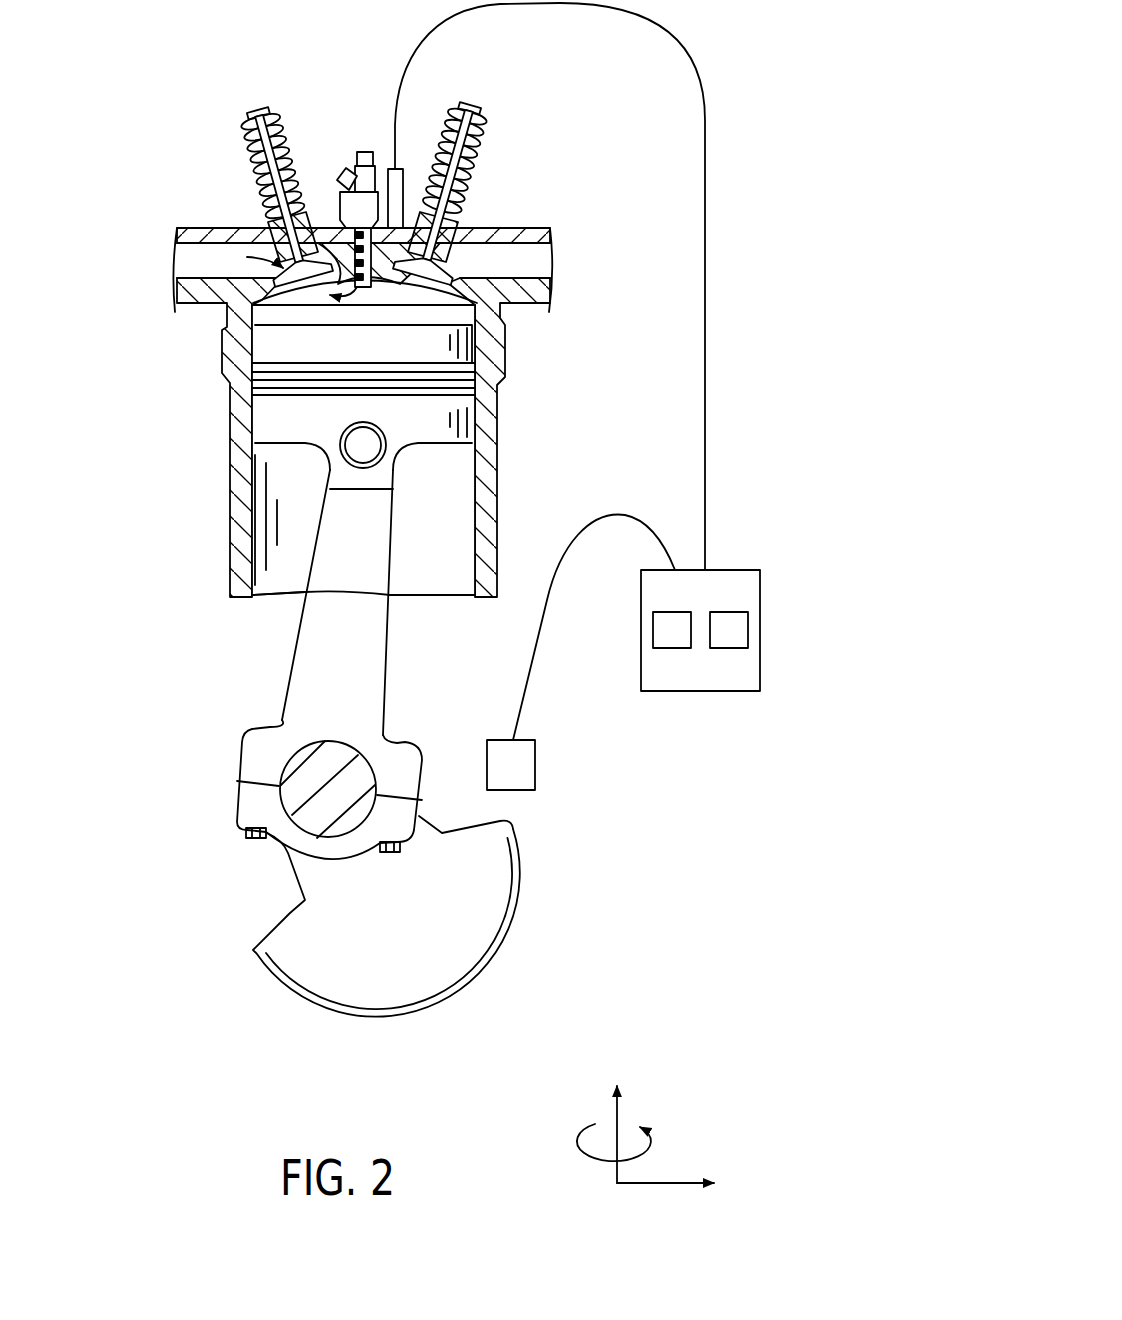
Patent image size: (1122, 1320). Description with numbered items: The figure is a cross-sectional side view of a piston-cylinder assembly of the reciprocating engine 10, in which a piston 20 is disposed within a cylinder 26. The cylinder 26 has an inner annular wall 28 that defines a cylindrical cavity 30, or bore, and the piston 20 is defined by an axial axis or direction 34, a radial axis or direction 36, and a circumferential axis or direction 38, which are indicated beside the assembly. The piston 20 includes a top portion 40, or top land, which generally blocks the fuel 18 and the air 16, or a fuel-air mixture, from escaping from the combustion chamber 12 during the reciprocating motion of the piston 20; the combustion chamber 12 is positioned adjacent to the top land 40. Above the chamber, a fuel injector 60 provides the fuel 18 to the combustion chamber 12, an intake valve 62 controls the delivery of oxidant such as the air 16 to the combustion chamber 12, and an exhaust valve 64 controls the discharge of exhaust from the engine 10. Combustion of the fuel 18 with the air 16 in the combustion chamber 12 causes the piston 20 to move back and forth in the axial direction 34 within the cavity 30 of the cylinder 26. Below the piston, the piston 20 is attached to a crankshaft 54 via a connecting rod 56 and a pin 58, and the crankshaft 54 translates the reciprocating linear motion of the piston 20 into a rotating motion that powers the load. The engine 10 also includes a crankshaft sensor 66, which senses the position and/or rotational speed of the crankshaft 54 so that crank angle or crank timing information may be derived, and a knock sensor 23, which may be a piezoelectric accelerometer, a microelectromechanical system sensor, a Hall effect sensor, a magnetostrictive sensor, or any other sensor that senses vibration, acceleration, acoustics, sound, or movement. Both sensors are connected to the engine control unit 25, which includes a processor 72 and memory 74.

The reciprocating engine 10 is at (596, 127).
The combustion chamber 12 is at (403, 291).
The air 16 is at (262, 250).
The fuel 18 is at (364, 144).
The piston 20 is at (442, 436).
The knock sensor 23 is at (407, 176).
The engine control unit 25 is at (732, 570).
The cylinder 26 is at (230, 485).
The inner annular wall 28 is at (262, 532).
The cylindrical cavity 30 is at (276, 590).
The axial axis 34 is at (612, 1115).
The radial axis 36 is at (662, 1183).
The circumferential axis 38 is at (655, 1152).
The top portion 40 is at (425, 352).
The crankshaft 54 is at (298, 945).
The connecting rod 56 is at (368, 704).
The pin 58 is at (362, 455).
The fuel injector 60 is at (372, 165).
The intake valve 62 is at (258, 106).
The exhaust valve 64 is at (472, 108).
The crankshaft sensor 66 is at (535, 770).
The processor 72 is at (672, 648).
The memory 74 is at (730, 648).